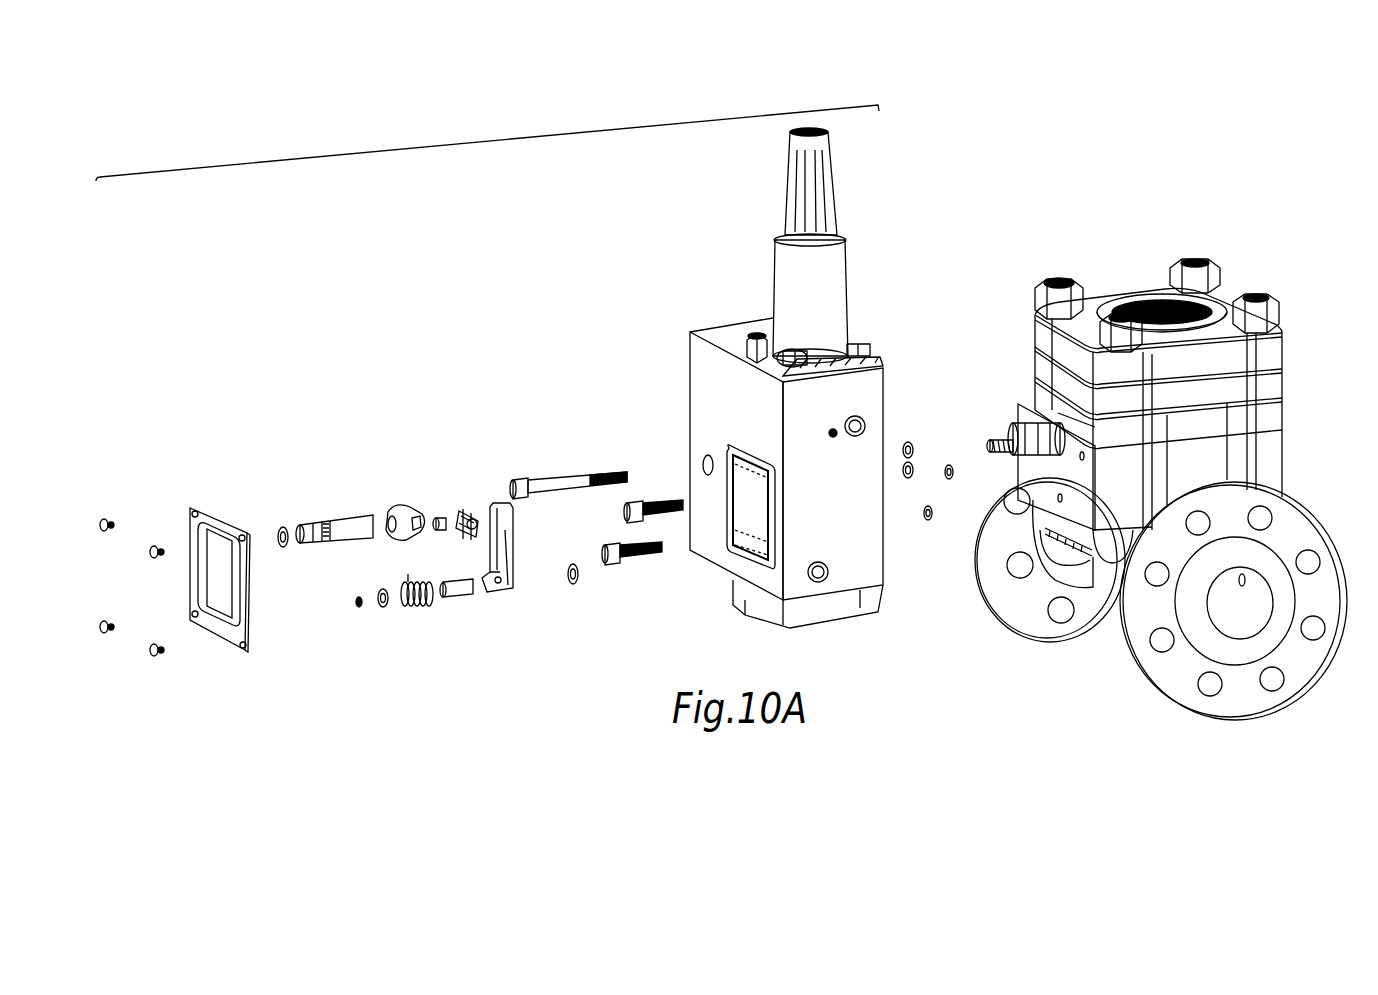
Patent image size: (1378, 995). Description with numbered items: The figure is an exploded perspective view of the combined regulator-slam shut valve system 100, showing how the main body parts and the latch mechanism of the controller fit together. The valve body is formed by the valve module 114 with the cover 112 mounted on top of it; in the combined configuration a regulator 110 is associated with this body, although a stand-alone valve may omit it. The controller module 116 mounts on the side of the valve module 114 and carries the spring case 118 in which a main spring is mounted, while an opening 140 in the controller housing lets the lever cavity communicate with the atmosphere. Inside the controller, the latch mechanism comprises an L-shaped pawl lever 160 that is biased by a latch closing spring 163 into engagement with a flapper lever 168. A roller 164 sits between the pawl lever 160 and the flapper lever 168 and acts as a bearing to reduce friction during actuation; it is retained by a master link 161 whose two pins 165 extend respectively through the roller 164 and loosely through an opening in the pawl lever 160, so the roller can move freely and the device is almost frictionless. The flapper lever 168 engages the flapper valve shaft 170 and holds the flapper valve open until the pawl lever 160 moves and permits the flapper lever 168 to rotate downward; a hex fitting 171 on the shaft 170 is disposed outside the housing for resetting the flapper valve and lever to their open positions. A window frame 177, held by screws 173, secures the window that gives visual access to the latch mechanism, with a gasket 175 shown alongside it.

The combined regulator-slam shut valve system 100 is at (773, 95).
The controller module 116 is at (484, 141).
The spring case 118 is at (838, 291).
The opening 140 is at (822, 582).
The cover 112 is at (1284, 347).
The regulator 110 is at (1284, 380).
The valve module 114 is at (1292, 397).
The flapper valve shaft 170 is at (995, 425).
The window frame 177 is at (188, 510).
The gasket 175 is at (212, 545).
The screws 173 is at (150, 548).
The hex fitting 171 is at (313, 545).
The flapper lever 168 is at (391, 508).
The roller 164 is at (436, 518).
The pins 165 is at (468, 514).
The master link 161 is at (479, 505).
The pawl lever 160 is at (510, 595).
The latch closing spring 163 is at (421, 606).